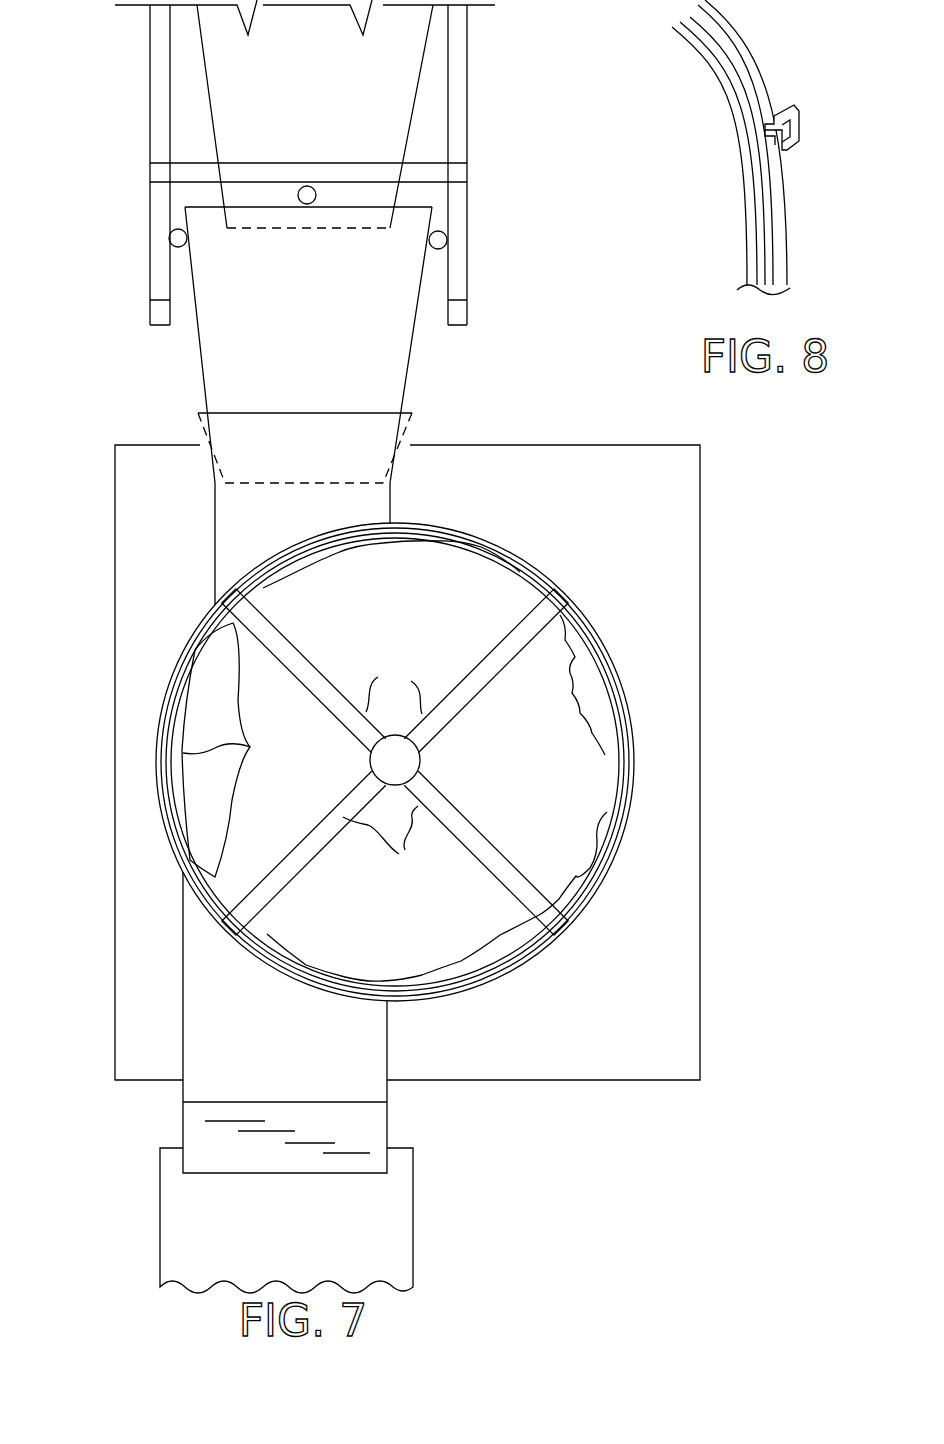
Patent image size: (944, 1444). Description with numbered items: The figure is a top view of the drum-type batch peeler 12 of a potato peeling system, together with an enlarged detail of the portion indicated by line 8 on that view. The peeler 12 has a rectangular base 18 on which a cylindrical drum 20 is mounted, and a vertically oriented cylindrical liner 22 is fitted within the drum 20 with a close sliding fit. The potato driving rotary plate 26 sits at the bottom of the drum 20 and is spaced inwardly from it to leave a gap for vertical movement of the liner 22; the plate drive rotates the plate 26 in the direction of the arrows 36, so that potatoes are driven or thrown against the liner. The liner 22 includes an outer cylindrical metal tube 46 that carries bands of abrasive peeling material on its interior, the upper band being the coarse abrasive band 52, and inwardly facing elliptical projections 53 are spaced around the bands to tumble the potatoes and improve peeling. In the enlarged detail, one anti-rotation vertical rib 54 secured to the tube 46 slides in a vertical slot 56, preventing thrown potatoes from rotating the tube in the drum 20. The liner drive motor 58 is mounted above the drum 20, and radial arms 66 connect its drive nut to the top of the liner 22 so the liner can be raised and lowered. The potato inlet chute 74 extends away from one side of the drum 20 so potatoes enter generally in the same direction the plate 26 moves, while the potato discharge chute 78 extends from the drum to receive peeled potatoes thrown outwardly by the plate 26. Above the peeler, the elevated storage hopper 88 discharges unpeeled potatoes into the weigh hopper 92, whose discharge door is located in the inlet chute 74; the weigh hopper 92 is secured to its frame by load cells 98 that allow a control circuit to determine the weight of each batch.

In FIG. 7, the section line 8— 8 is at (577, 648).
In FIG. 7, the drum-type batch peeler 12 is at (644, 1141).
In FIG. 7, the rectangular base 18 is at (700, 575).
In FIG. 7, the cylindrical drum 20 is at (545, 572).
In FIG. 8, the cylindrical drum 20 is at (789, 203).
In FIG. 7, the cylindrical liner 22 is at (617, 802).
In FIG. 7, the potato driving rotary plate 26 is at (492, 804).
In FIG. 7, the arrows indicating direction of plate rotation 36 is at (338, 623).
In FIG. 8, the outer cylindrical metal tube 46 is at (770, 290).
In FIG. 8, the upper coarse abrasive band 52 is at (742, 135).
In FIG. 7, the elliptical projections 53 is at (251, 746).
In FIG. 8, the anti-rotation vertical ribs 54 is at (786, 106).
In FIG. 8, the vertical slots 56 is at (800, 133).
In FIG. 7, the drive motor 58 is at (403, 756).
In FIG. 7, the radial arms 66 is at (385, 772).
In FIG. 7, the potato inlet chute 74 is at (215, 545).
In FIG. 7, the potato discharge chute 78 is at (387, 1042).
In FIG. 7, the elevated storage hopper 88 is at (393, 112).
In FIG. 7, the weigh hopper 92 is at (223, 332).
In FIG. 7, the load cells 98 is at (424, 240).